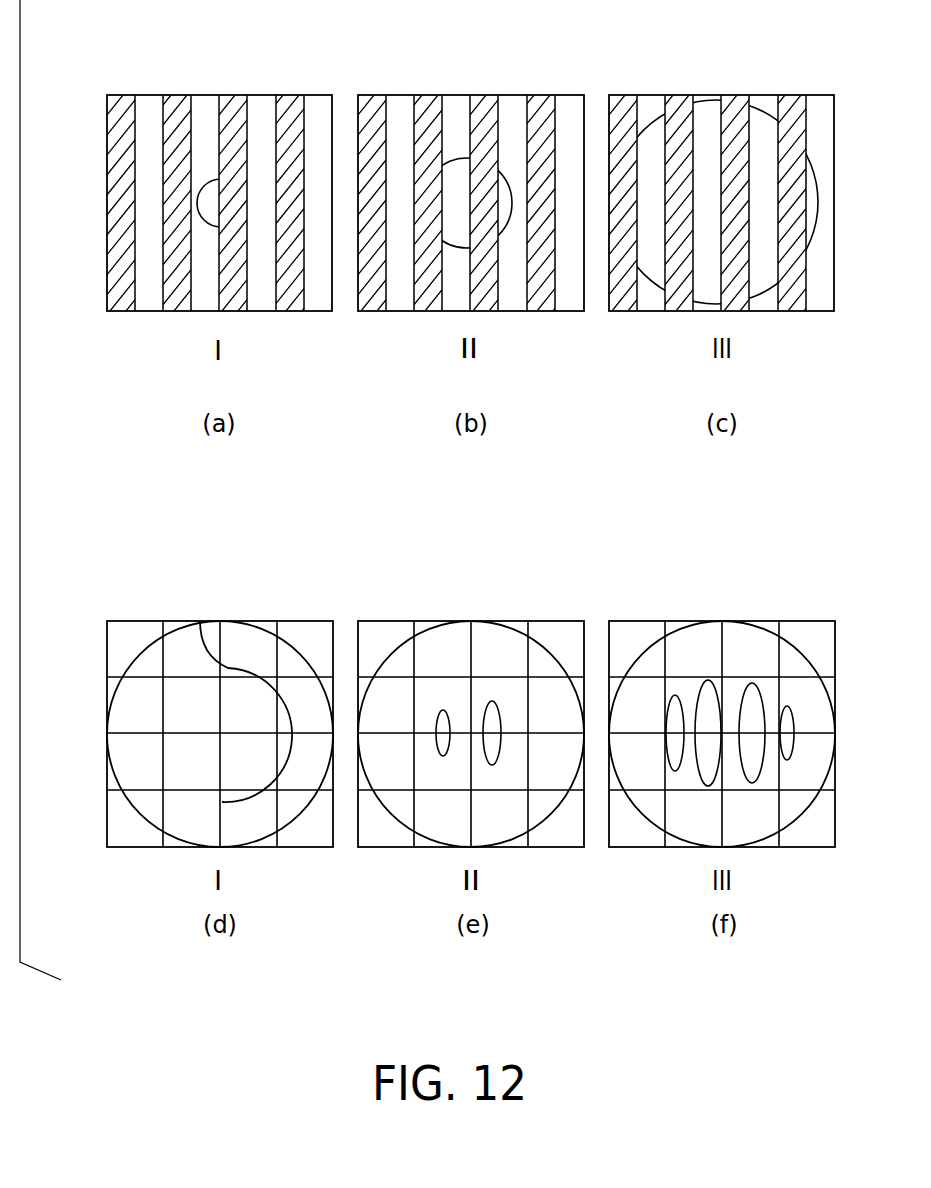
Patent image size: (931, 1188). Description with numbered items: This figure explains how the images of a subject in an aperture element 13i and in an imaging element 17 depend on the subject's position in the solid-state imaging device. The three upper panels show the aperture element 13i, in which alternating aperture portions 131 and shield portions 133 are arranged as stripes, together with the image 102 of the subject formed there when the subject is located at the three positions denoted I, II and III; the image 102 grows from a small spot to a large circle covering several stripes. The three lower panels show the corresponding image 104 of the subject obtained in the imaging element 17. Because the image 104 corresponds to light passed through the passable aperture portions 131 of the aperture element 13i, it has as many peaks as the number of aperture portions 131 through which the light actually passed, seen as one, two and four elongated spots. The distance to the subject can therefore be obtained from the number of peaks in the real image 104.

The aperture portion 131 is at (198, 107).
The shield portion 133 is at (235, 105).
The image 102 is at (210, 217).
The aperture element 13i is at (285, 318).
The image 104 is at (200, 621).
The imaging element 17 is at (283, 620).